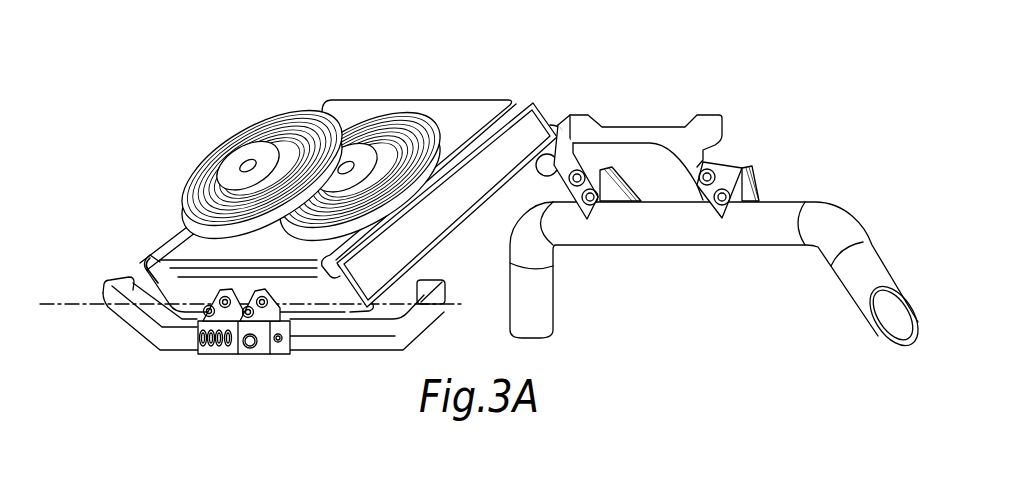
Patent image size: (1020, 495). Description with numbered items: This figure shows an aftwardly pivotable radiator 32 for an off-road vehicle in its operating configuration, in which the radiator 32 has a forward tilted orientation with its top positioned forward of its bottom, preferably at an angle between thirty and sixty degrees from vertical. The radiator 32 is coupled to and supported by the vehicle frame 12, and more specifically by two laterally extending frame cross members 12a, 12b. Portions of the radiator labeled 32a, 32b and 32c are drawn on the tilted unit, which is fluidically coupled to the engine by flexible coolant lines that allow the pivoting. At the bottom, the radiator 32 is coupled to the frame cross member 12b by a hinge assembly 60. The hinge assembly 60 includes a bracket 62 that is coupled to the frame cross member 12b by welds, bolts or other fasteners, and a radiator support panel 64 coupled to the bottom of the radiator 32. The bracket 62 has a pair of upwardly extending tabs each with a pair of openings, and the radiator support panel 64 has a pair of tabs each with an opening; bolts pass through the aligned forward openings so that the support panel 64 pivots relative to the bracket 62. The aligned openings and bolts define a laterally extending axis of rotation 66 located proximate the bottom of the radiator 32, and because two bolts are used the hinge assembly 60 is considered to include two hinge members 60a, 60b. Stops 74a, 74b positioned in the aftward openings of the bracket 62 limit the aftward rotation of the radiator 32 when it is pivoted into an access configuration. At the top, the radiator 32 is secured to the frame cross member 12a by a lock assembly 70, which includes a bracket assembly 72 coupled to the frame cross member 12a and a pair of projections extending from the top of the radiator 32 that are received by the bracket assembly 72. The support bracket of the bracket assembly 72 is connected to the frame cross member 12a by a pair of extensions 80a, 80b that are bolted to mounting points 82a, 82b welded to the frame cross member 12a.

The frame 12 is at (807, 200).
The frame cross member 12a is at (847, 227).
The frame cross member 12b is at (117, 316).
The radiator 32 is at (473, 100).
The fan 32a is at (293, 125).
The fan 32b is at (383, 132).
The radiator housing 32c is at (436, 116).
The hinge assembly 60 is at (195, 357).
The hinge member 60a is at (238, 323).
The hinge member 60b is at (263, 318).
The bracket 62 is at (293, 338).
The radiator support panel 64 is at (167, 249).
The axis of rotation 66 is at (47, 301).
The lock assembly 70 is at (710, 110).
The bracket assembly 72 is at (637, 130).
The stop 74a is at (212, 346).
The stop 74b is at (252, 323).
The extension 80a is at (570, 140).
The extension 80b is at (683, 140).
The mounting point 82a is at (613, 192).
The mounting point 82b is at (746, 192).